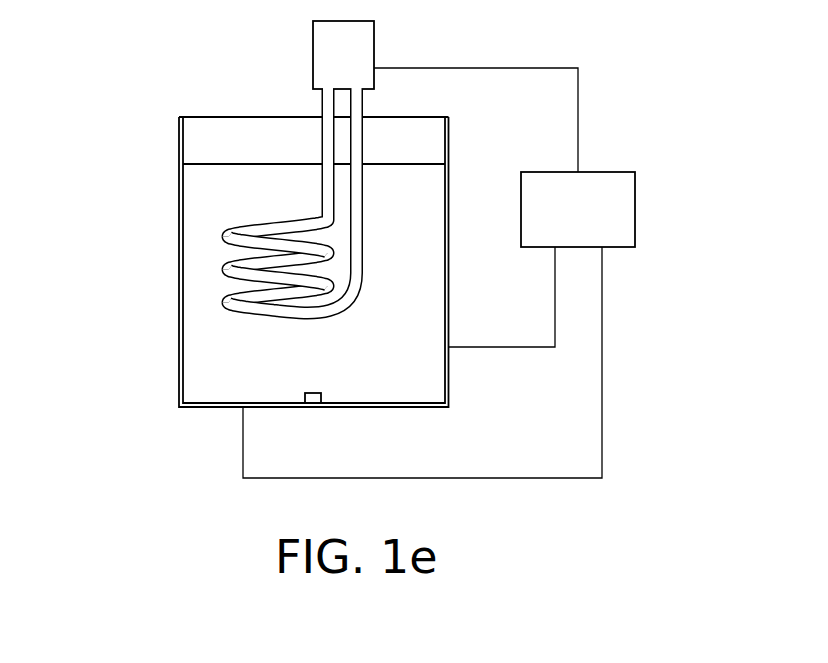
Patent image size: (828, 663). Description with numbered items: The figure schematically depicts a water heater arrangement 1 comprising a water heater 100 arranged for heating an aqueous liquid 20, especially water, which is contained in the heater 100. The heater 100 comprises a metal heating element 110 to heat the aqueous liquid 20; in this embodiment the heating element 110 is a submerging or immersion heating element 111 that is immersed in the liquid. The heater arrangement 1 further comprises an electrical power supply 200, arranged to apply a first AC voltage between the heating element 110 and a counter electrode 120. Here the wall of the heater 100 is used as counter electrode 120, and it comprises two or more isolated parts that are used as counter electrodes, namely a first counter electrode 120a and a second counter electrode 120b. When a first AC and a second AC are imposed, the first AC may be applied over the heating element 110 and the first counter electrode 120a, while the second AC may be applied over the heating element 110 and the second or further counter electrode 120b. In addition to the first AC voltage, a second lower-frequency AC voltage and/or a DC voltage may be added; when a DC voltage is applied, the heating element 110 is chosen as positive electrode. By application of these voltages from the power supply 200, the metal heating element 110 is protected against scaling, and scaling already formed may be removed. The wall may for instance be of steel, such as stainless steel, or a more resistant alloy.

The heater arrangement 1 is at (372, 249).
The aqueous liquid 20 is at (185, 245).
The water heater 100 is at (301, 269).
The metal heating element 110 is at (347, 167).
The submerging/immersion heating element 111 is at (326, 101).
The counter electrode 120 is at (312, 262).
The first counter electrode 120a is at (449, 377).
The second counter electrode 120b is at (183, 307).
The electrical power supply 200 is at (617, 158).